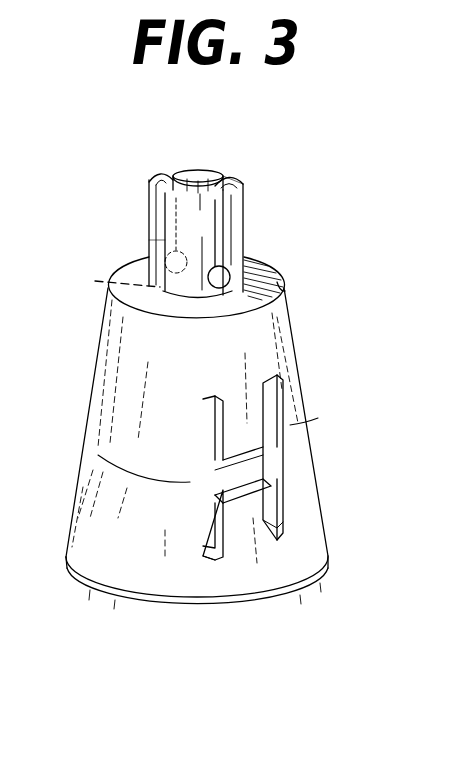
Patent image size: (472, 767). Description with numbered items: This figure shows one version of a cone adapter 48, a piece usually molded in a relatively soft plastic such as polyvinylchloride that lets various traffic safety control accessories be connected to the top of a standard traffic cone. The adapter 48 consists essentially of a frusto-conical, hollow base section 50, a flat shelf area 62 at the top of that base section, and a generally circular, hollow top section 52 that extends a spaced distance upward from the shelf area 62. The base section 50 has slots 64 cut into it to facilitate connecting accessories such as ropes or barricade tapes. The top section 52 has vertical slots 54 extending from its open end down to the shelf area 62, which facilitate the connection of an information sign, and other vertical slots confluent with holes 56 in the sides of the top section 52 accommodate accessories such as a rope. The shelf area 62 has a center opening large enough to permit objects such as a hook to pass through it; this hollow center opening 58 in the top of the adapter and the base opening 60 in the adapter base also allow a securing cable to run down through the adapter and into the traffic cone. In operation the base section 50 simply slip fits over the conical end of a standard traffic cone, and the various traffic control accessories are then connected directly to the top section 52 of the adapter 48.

The cone adapter 48 is at (355, 246).
The base section 50 is at (298, 424).
The top section 52 is at (148, 212).
The vertical slots 54 is at (157, 240).
The holes 56 is at (86, 280).
The opening 58 is at (205, 181).
The base opening 60 is at (138, 571).
The shelf area 62 is at (284, 283).
The slots 64 is at (217, 560).